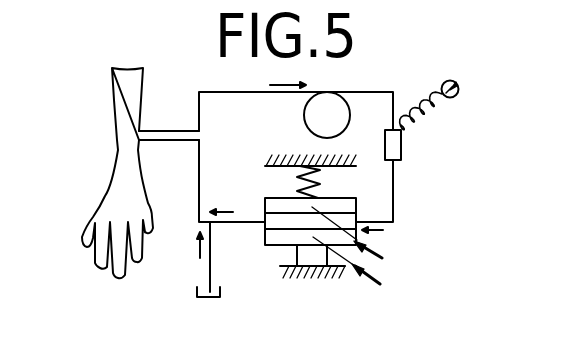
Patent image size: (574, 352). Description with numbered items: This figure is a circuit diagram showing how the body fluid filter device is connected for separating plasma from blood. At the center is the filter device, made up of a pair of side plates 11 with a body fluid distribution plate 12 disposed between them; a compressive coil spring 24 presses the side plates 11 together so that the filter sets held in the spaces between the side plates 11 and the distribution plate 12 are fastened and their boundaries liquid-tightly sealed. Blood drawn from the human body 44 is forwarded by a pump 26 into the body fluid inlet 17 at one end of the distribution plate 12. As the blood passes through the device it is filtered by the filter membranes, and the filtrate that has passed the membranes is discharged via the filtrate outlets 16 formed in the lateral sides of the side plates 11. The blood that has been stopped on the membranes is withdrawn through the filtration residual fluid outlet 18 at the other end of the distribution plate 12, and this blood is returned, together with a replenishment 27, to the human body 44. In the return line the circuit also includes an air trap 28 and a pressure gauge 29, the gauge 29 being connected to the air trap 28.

The side plate 11 is at (343, 199).
The body fluid distribution plate 12 is at (265, 213).
The filtrate outlet 16 is at (372, 281).
The body fluid inlet 17 is at (371, 222).
The filtration residual fluid outlet 18 is at (249, 224).
The compressive coil spring 24 is at (300, 184).
The pump 26 is at (325, 105).
The replenishment 27 is at (210, 300).
The air trap 28 is at (402, 148).
The pressure gauge 29 is at (456, 97).
The human body 44 is at (118, 125).